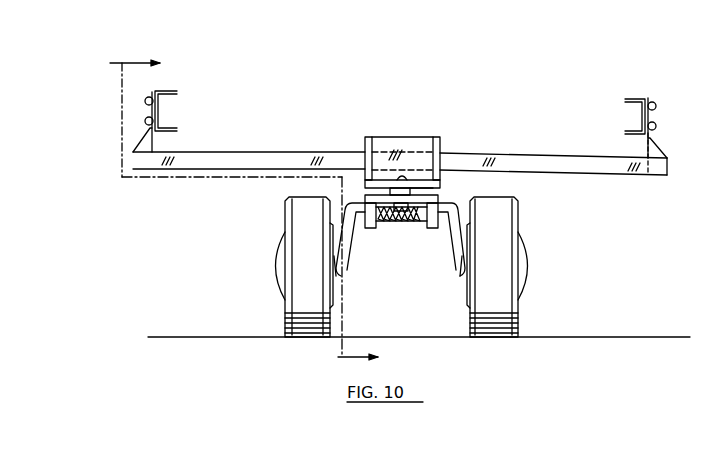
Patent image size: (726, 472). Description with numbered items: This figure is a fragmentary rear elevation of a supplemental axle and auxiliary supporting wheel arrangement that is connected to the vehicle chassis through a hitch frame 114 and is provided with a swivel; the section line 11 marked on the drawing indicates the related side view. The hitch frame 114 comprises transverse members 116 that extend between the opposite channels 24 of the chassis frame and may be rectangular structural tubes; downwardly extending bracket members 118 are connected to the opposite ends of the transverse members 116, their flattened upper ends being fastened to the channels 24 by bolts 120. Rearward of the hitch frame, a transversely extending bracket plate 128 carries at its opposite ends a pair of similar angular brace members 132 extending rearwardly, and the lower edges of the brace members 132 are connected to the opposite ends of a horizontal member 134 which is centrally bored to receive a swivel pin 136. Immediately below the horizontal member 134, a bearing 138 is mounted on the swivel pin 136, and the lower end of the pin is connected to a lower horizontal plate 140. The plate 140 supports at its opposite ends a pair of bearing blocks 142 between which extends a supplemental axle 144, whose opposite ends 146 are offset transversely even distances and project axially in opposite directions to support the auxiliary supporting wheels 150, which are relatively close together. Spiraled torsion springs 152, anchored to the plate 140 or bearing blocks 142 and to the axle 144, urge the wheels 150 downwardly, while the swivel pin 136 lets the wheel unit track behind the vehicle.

The section line 11- 11 is at (108, 72).
The channels 24 is at (175, 93).
The hitch frame 114 is at (563, 176).
The transverse members 116 is at (258, 162).
The bracket members 118 is at (150, 141).
The bolts 120 is at (146, 100).
The bracket plate 128 is at (396, 142).
The angular brace members 132 is at (367, 147).
The horizontal member 134 is at (382, 183).
The swivel pin 136 is at (405, 177).
The bearing 138 is at (416, 190).
The lower horizontal plate 140 is at (376, 198).
The bearing blocks 142 is at (370, 230).
The supplemental axle 144 is at (402, 218).
The opposite ends 146 is at (462, 268).
The auxiliary supporting wheels 150 is at (300, 322).
The spiraled torsion springs 152 is at (410, 222).